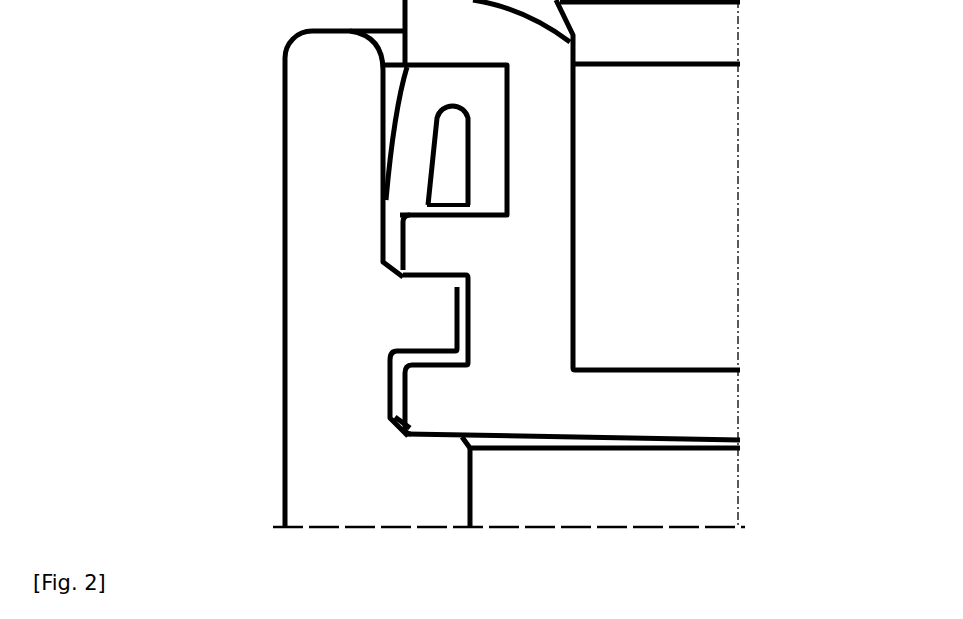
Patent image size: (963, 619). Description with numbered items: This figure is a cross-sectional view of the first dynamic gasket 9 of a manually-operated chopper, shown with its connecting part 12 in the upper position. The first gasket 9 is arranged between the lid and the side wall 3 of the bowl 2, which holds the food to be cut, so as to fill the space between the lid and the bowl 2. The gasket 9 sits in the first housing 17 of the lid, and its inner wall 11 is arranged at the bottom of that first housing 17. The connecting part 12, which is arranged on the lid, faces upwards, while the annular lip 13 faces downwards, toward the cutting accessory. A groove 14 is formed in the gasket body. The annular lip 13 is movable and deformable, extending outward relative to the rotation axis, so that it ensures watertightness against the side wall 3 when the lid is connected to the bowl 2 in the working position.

The bowl 2 is at (383, 478).
The side wall 3 is at (387, 97).
The first dynamic gasket 9 is at (513, 150).
The inner wall 11 is at (493, 117).
The connecting part 12 is at (457, 80).
The annular lip 13 is at (417, 188).
The groove 14 is at (447, 157).
The first housing 17 is at (447, 210).